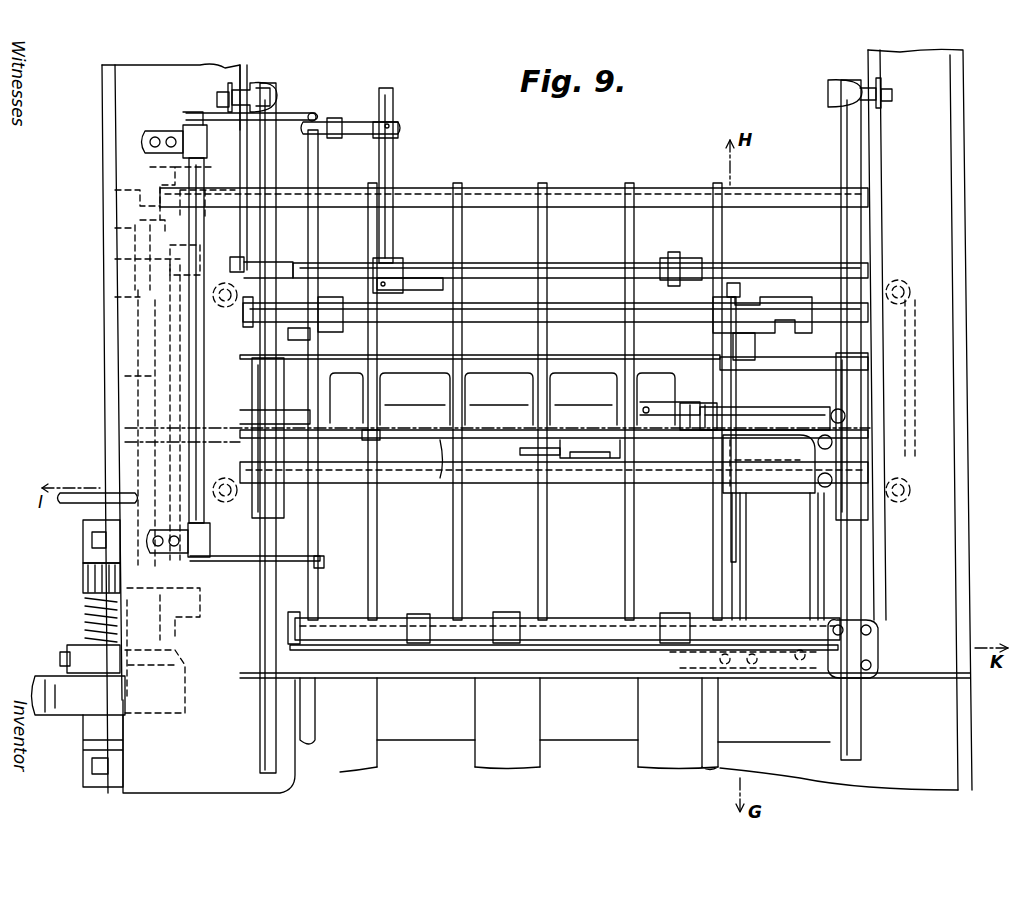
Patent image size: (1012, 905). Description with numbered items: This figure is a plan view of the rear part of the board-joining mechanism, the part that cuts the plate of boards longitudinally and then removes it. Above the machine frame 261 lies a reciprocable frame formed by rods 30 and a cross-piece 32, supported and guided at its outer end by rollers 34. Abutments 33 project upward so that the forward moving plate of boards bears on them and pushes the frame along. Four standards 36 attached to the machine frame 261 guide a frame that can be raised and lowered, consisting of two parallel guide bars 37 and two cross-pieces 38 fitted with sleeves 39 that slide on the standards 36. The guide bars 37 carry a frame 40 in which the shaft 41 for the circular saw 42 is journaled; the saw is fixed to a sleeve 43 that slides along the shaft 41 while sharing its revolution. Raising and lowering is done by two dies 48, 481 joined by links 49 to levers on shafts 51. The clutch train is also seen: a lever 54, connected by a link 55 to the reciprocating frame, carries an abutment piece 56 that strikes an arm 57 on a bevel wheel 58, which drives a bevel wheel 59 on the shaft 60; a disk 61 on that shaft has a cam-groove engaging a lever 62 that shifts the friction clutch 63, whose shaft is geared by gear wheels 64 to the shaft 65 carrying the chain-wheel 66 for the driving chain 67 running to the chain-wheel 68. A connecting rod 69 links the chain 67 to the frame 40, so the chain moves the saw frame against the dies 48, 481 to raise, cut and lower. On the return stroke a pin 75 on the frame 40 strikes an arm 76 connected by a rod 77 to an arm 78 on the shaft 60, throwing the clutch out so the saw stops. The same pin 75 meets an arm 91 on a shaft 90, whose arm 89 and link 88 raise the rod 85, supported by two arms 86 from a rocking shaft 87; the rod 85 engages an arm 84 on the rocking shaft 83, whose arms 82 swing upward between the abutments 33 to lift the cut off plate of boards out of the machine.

The machine frame 261 is at (142, 65).
The rods 30 is at (278, 250).
The rollers 34 is at (228, 86).
The arms 86 is at (290, 110).
The arm 57 is at (187, 334).
The link 55 is at (250, 158).
The link 88 is at (333, 118).
The arm 89 is at (362, 134).
The shaft 90 is at (394, 150).
The rod 85 is at (318, 178).
The rod 77 is at (588, 263).
The lever 54 is at (250, 240).
The arm 91 is at (416, 282).
The arm 76 is at (678, 258).
The pin 75 is at (735, 283).
The die 481 is at (836, 302).
The die 48 is at (345, 322).
The links 49 is at (312, 335).
The rocking shaft 83 is at (492, 355).
The abutments 33 is at (410, 408).
The connecting rod 69 is at (650, 402).
The chain-wheel 66 is at (125, 430).
The shaft 65 is at (125, 448).
The shafts 51 is at (494, 430).
The arm 84 is at (295, 435).
The arms 82 is at (372, 430).
The guide bars 37 is at (588, 355).
The driving chain 67 is at (446, 440).
The chain-wheel 68 is at (572, 440).
The frame 40 is at (778, 493).
The shaft 41 is at (748, 552).
The standards 36 is at (212, 302).
The sleeves 39 is at (213, 290).
The cross-pieces 38 is at (190, 370).
The bevel wheel 58 is at (115, 157).
The bevel wheel 59 is at (115, 190).
The abutment piece 56 is at (115, 228).
The shaft 60 is at (115, 259).
The arm 78 is at (115, 297).
The rocking shaft 87 is at (125, 376).
The gear wheels 64 is at (83, 565).
The friction clutch 63 is at (62, 680).
The lever 62 is at (178, 636).
The disk 61 is at (185, 663).
The sleeve 43 is at (730, 625).
The circular saw 42 is at (780, 645).
The cross-piece 32 is at (580, 680).